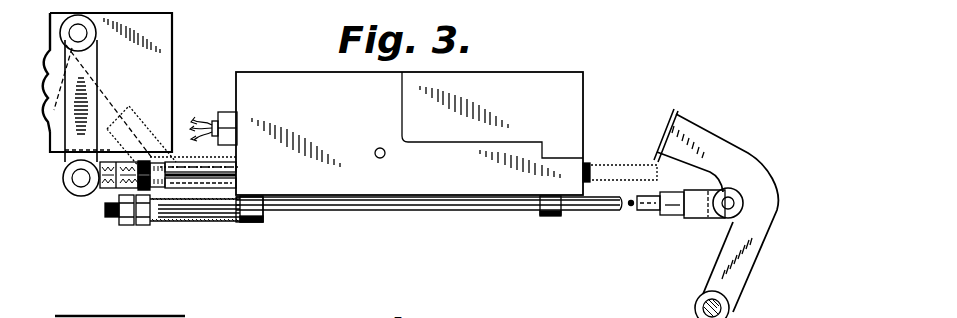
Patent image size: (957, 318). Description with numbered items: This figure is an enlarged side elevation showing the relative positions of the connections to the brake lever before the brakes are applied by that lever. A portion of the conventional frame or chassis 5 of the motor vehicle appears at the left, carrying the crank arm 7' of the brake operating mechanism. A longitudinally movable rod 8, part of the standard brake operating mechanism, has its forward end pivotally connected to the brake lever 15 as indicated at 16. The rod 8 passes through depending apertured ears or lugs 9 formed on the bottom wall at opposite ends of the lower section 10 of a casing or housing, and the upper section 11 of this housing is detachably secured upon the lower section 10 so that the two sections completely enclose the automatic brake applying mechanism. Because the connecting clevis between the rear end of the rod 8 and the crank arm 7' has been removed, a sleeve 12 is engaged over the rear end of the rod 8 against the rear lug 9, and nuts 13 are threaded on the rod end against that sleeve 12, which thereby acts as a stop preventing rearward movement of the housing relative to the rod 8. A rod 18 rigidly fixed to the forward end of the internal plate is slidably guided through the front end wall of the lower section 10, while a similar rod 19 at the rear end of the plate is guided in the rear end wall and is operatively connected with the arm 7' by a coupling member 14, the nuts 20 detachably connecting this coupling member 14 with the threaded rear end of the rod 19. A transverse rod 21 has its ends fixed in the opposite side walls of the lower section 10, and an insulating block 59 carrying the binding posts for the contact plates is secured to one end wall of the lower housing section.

The frame or chassis 5 is at (155, 37).
The crank arm 7' is at (99, 118).
The nuts 20 is at (143, 162).
The insulating block 59 is at (227, 118).
The lower section of housing 10 is at (409, 133).
The upper section of housing 11 is at (492, 115).
The transverse rod 21 is at (385, 157).
The rod 18 is at (593, 160).
The longitudinally movable rod 8 is at (393, 215).
The depending apertured ears or lugs 9 is at (252, 222).
The coupling member 14 is at (108, 190).
The nuts 13 is at (127, 226).
The sleeve 12 is at (180, 223).
The rod 19 is at (240, 224).
The brake lever 15 is at (725, 161).
The pivotal connection 16 is at (734, 197).